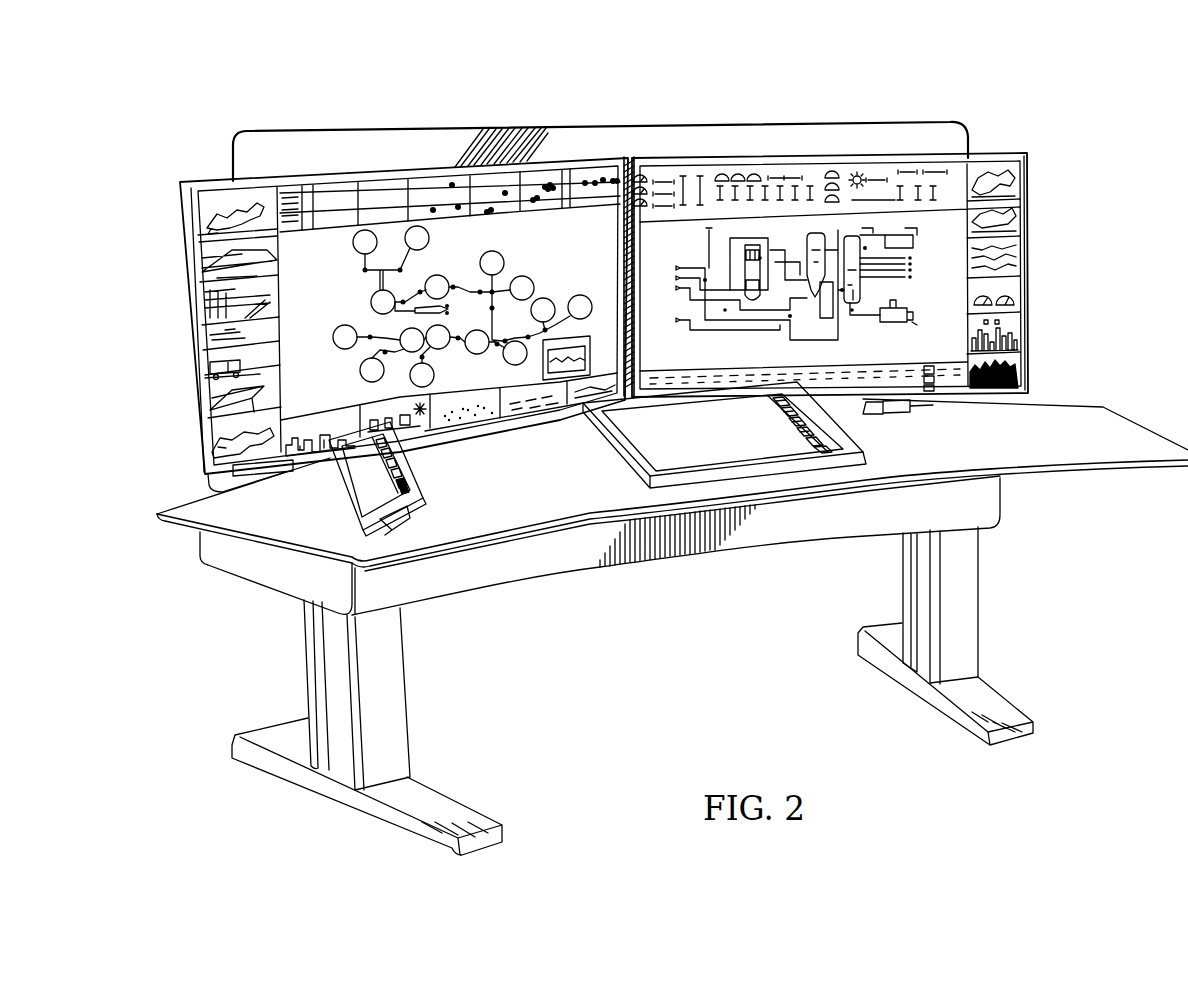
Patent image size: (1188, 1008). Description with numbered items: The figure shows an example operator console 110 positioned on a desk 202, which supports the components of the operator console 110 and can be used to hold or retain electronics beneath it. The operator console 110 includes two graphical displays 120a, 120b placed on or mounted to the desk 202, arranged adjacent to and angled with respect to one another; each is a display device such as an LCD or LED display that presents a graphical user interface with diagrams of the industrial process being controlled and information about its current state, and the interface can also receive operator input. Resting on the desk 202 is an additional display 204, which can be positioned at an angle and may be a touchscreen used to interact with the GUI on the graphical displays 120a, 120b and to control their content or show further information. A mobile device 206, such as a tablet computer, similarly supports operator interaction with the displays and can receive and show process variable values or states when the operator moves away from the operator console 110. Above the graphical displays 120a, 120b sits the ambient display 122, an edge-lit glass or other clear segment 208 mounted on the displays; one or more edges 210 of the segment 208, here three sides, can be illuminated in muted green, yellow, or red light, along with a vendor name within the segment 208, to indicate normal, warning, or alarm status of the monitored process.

The operator console 110 is at (182, 121).
The ambient display 122 is at (446, 96).
The edges 210 is at (389, 129).
The clear segment 208 is at (645, 147).
The graphical display 120a is at (188, 327).
The graphical display 120b is at (1032, 267).
The desk 202 is at (734, 550).
The additional display 204 is at (617, 458).
The mobile device 206 is at (345, 499).